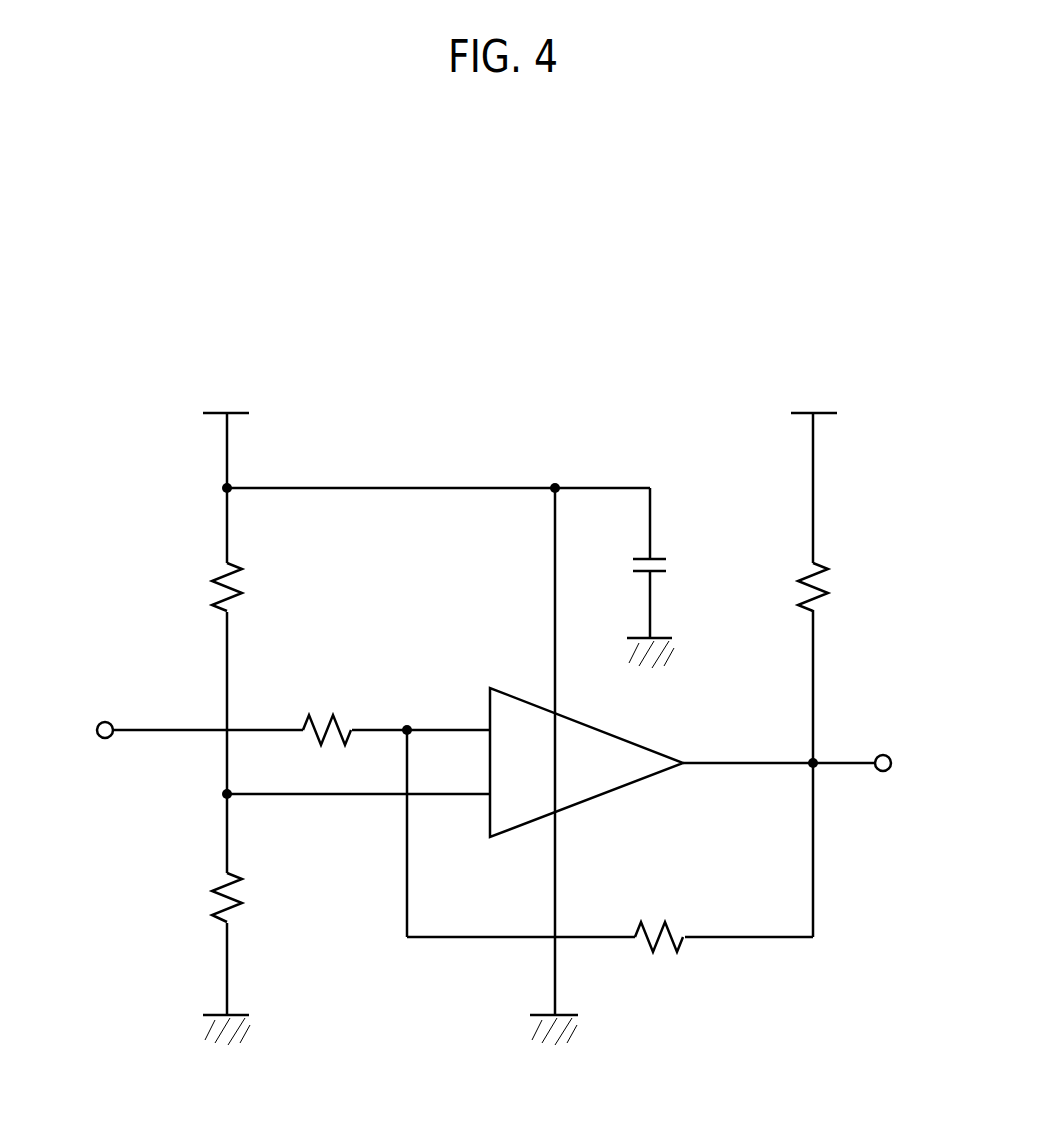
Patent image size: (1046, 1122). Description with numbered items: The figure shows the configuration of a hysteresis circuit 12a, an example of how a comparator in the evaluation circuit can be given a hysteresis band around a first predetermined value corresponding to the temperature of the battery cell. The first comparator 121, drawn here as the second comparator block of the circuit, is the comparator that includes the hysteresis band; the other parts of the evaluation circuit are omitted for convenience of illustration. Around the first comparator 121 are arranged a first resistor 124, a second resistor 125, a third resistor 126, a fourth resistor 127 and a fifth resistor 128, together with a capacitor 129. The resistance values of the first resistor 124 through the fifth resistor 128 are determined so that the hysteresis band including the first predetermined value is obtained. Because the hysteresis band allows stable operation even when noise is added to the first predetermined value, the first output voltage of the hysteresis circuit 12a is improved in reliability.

The hysteresis circuit 12a is at (519, 344).
The first comparator 121 is at (503, 687).
The first resistor 124 is at (211, 588).
The second resistor 125 is at (211, 900).
The third resistor 126 is at (327, 713).
The fourth resistor 127 is at (828, 572).
The fifth resistor 128 is at (659, 955).
The capacitor 129 is at (658, 558).